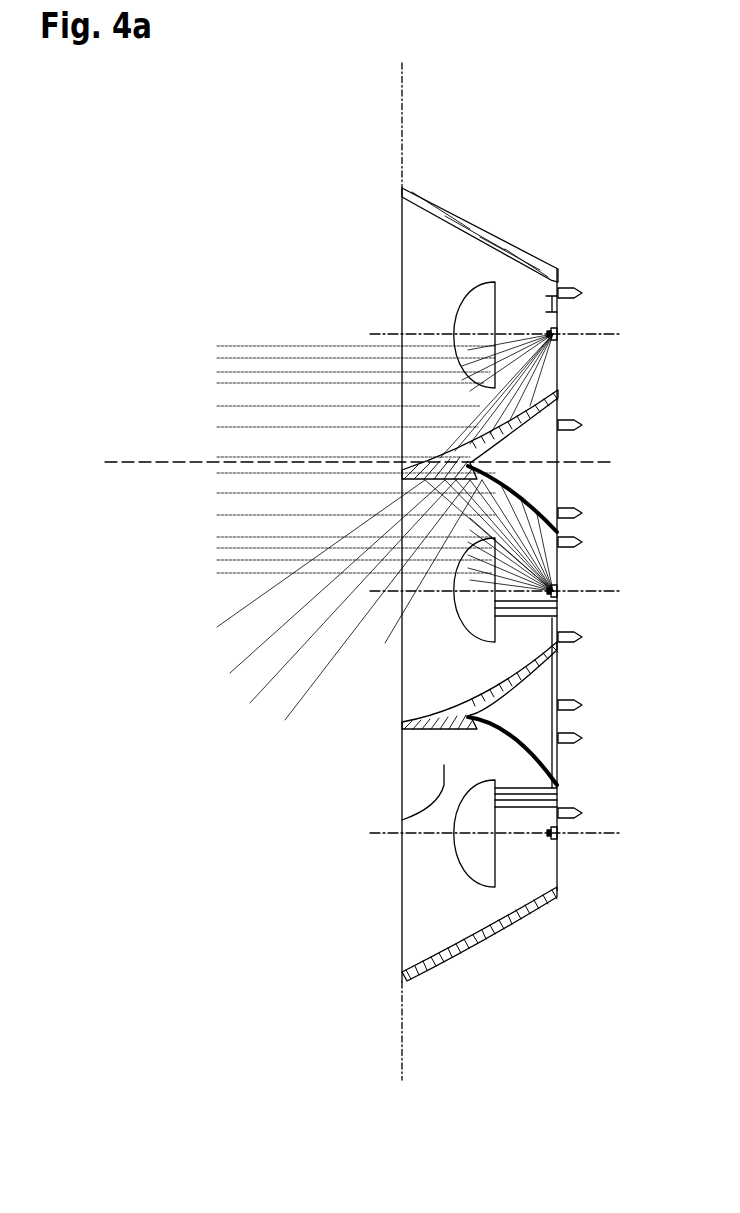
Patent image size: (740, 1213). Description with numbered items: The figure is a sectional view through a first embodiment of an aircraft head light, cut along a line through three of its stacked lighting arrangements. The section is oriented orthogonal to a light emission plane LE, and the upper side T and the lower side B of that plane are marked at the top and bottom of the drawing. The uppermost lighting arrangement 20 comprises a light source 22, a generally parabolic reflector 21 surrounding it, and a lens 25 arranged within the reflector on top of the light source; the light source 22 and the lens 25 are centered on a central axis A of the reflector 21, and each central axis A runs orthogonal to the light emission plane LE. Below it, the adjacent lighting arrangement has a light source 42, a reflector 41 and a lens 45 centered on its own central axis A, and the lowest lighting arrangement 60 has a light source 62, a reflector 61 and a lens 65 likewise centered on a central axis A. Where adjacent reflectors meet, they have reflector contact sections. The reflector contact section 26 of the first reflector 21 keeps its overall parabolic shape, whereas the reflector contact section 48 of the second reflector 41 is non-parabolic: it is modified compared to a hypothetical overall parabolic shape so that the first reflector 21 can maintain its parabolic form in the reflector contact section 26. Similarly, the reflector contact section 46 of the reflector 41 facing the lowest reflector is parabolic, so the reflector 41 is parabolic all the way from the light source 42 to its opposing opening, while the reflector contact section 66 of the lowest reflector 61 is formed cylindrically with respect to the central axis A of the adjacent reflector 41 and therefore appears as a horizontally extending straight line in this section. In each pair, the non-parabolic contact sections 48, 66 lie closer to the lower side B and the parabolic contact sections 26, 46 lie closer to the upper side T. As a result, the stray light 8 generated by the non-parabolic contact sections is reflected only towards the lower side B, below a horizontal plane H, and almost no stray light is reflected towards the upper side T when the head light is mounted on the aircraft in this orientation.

The stray light 8 is at (259, 728).
The lighting arrangement 20 is at (380, 223).
The reflector 21 is at (507, 233).
The light source 22 is at (558, 336).
The lens 25 is at (462, 307).
The reflector contact section 26 is at (428, 444).
The reflector 41 is at (538, 681).
The light source 42 is at (558, 593).
The lens 45 is at (466, 618).
The reflector contact section 46 is at (499, 713).
The reflector contact section 48 is at (408, 497).
The lighting arrangement 60 is at (380, 947).
The reflector 61 is at (523, 927).
The light source 62 is at (558, 836).
The lens 65 is at (462, 863).
The reflector contact section 66 is at (444, 748).
The light emission plane LE is at (403, 76).
The horizontal plane H is at (120, 463).
The central axis A is at (381, 334).
The upper side T is at (503, 163).
The lower side B is at (474, 1056).